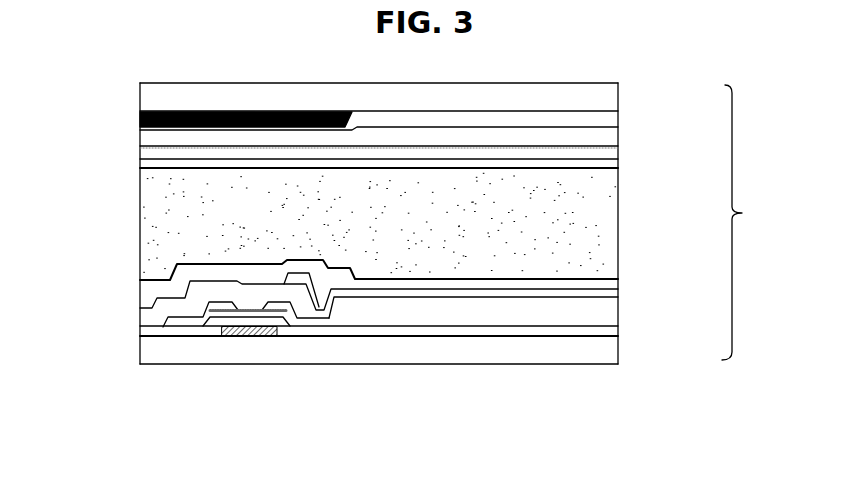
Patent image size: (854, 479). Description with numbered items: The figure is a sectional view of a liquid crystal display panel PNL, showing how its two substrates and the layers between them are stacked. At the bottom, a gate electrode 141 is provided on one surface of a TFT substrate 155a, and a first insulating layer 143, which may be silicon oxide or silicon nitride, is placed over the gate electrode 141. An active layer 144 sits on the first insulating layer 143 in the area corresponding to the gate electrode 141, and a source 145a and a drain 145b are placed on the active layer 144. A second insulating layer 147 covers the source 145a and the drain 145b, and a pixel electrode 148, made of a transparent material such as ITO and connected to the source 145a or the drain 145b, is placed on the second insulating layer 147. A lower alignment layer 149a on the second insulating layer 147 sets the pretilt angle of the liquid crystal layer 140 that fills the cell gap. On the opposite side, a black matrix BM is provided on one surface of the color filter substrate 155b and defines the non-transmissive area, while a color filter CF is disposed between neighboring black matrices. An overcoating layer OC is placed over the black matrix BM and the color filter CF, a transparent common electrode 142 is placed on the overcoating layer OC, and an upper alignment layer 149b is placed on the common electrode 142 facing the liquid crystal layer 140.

The color filter substrate 155b is at (618, 93).
The black matrix BM is at (140, 125).
The color filter CF is at (618, 120).
The overcoating layer OC is at (618, 137).
The common electrode 142 is at (145, 148).
The upper alignment layer 149b is at (618, 165).
The liquid crystal layer 140 is at (145, 223).
The lower alignment layer 149a is at (618, 283).
The pixel electrode 148 is at (345, 297).
The second insulating layer 147 is at (618, 313).
The drain 145b is at (298, 327).
The active layer 144 is at (225, 337).
The source 145a is at (184, 327).
The gate electrode 141 is at (258, 337).
The first insulating layer 143 is at (145, 333).
The TFT substrate 155a is at (618, 350).
The display panel PNL is at (750, 222).